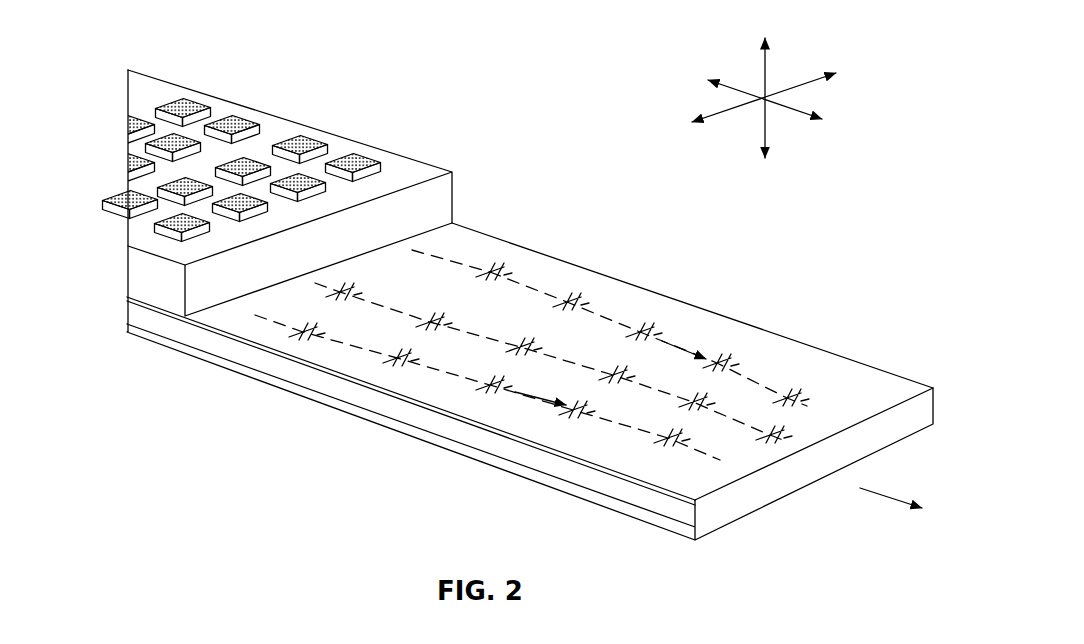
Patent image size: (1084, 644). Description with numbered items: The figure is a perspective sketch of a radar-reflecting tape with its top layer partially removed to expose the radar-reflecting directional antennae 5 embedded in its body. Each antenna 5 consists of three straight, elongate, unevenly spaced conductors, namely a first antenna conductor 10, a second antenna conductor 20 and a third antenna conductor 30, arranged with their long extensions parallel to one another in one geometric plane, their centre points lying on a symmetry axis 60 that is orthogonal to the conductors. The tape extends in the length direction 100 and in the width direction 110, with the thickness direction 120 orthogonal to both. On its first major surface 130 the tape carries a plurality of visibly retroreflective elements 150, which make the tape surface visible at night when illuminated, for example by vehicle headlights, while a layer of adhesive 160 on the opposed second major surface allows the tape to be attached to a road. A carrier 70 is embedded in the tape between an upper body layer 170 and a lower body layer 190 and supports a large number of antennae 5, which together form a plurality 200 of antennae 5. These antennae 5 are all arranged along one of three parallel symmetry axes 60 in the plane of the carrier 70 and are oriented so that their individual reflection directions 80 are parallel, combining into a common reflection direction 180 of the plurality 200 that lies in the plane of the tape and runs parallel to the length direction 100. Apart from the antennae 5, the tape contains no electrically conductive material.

The radar-reflecting directional antenna 5 is at (356, 286).
The first antenna conductor 10 is at (490, 281).
The second antenna conductor 20 is at (480, 278).
The third antenna conductor 30 is at (510, 277).
The symmetry axis 60 is at (454, 374).
The carrier 70 is at (383, 390).
The reflection direction 80 is at (530, 396).
The length direction 100 is at (792, 113).
The width direction 110 is at (818, 75).
The thickness direction 120 is at (762, 58).
The first major surface 130 is at (403, 162).
The visibly retroreflective elements 150 is at (305, 140).
The layer of adhesive 160 is at (252, 370).
The upper body layer 170 is at (150, 272).
The common reflection direction 180 is at (905, 502).
The lower body layer 190 is at (193, 336).
The plurality of antennae 200 is at (812, 242).